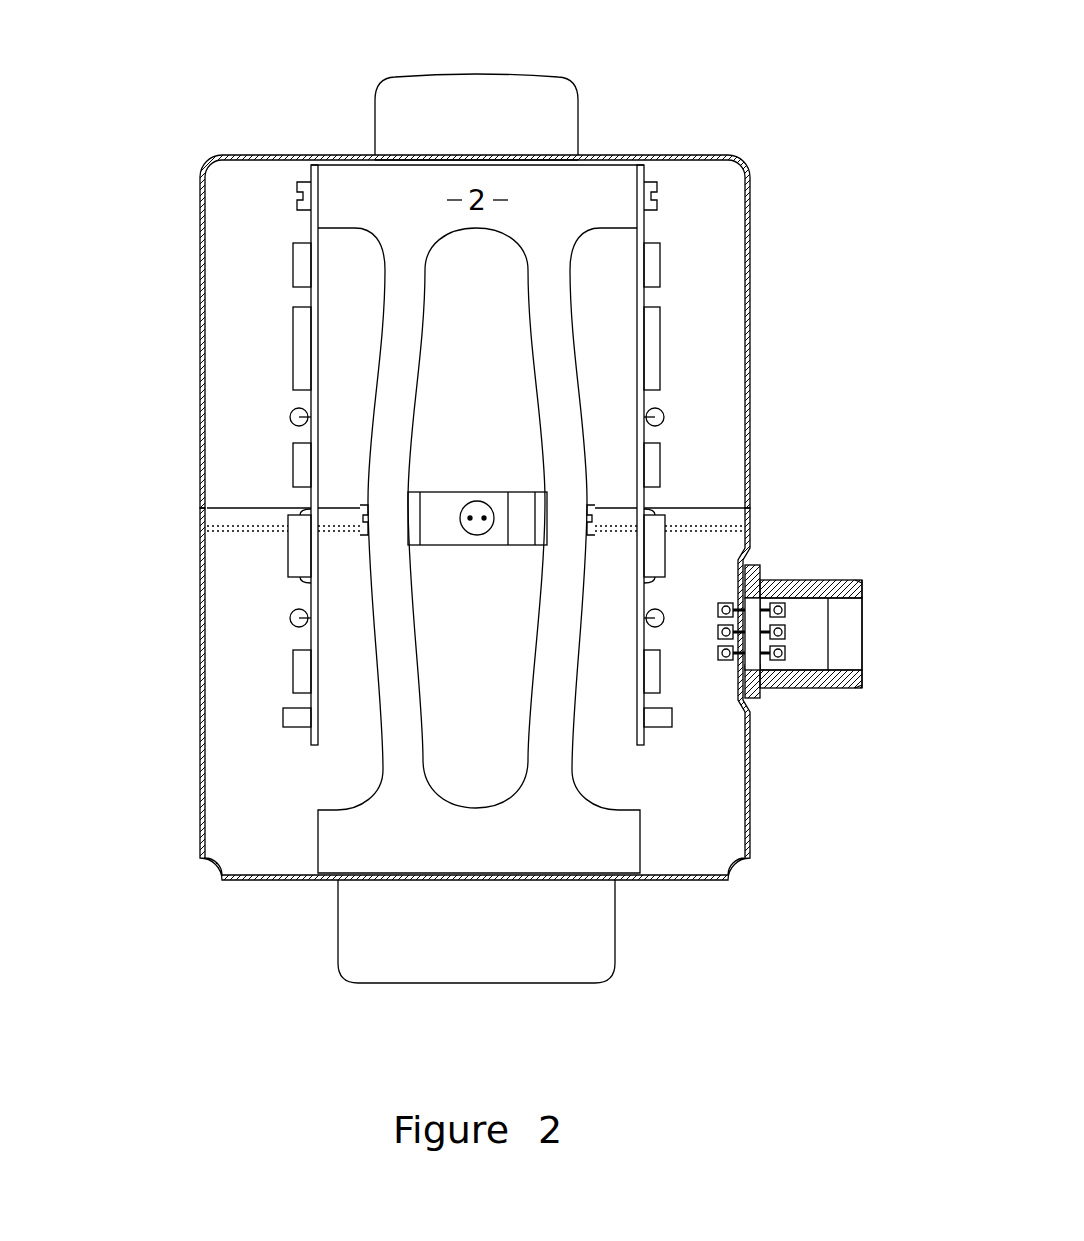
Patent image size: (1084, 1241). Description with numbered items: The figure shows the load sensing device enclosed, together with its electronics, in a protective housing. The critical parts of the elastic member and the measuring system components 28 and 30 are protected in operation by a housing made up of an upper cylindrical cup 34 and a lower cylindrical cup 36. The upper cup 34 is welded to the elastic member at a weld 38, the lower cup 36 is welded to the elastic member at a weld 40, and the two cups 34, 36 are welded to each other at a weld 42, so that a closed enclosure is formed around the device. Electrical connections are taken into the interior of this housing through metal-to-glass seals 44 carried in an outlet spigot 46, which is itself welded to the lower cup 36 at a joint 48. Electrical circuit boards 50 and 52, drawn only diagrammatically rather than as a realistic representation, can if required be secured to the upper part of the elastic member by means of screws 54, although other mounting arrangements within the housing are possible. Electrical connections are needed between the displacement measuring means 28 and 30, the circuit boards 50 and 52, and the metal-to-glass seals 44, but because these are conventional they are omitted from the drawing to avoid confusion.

The measuring system component 28 is at (441, 490).
The measuring system component 30 is at (527, 490).
The upper cylindrical cup 34 is at (200, 400).
The lower cylindrical cup 36 is at (200, 675).
The weld 38 is at (590, 156).
The weld 40 is at (327, 887).
The weld 42 is at (200, 522).
The metal-to-glass seals 44 is at (765, 660).
The outlet spigot 46 is at (867, 583).
The joint 48 is at (755, 562).
The electrical circuit board 50 is at (305, 295).
The electrical circuit board 52 is at (650, 295).
The screws 54 is at (297, 186).